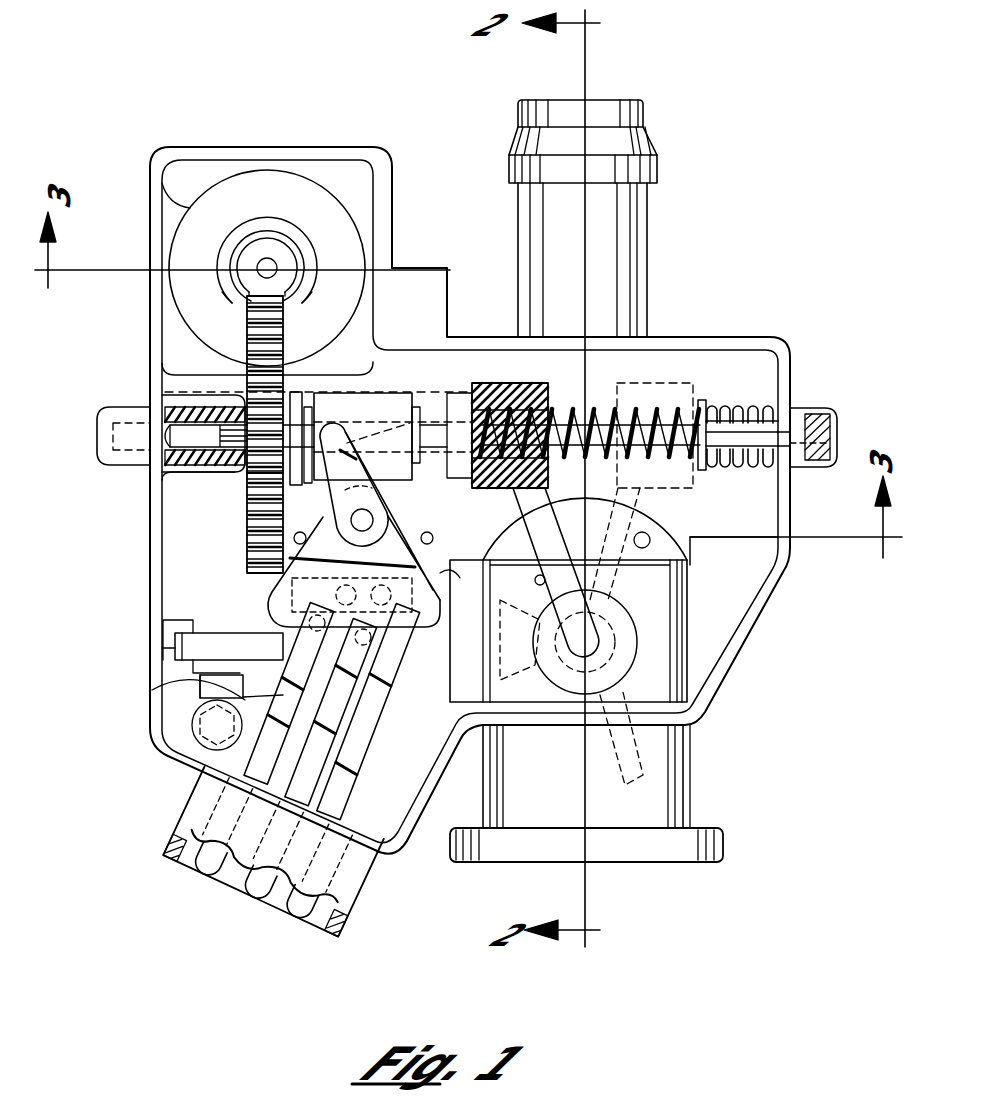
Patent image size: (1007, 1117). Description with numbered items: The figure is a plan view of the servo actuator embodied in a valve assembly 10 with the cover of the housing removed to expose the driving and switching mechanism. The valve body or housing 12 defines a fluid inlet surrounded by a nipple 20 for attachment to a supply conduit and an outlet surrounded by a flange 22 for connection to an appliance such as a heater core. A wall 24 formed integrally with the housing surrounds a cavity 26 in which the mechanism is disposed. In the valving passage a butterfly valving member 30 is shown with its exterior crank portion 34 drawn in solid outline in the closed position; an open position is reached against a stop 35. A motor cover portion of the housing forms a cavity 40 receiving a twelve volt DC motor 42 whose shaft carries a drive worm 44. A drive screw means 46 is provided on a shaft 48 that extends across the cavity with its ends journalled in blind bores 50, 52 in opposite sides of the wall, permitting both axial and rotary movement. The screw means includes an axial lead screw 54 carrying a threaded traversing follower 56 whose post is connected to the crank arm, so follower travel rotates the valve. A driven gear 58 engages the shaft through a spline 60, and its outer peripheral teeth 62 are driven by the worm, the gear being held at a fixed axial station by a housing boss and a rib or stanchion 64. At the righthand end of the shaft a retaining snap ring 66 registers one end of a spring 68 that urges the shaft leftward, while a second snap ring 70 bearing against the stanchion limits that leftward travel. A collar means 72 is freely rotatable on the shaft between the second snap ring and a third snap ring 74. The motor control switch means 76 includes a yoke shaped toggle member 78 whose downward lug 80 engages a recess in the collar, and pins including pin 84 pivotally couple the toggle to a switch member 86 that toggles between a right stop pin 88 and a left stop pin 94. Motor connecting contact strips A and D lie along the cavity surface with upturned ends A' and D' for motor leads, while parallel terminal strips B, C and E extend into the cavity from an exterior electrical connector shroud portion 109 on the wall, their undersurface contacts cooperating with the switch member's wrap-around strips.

The valve assembly 10 is at (156, 138).
The valve body or housing 12 is at (150, 676).
The nipple 20 is at (657, 167).
The flange 22 is at (723, 847).
The wall 24 is at (710, 354).
The cavity 26 is at (195, 546).
The movable valving member 30 is at (571, 584).
The crank portion 34 is at (535, 580).
The stop 35 is at (650, 532).
The cavity 40 is at (335, 178).
The motor 42 is at (150, 176).
The drive worm 44 is at (247, 242).
The drive screw means 46 is at (604, 394).
The shaft 48 is at (165, 392).
The blind bore 50 is at (150, 466).
The blind bore 52 is at (800, 412).
The lead screw 54 is at (510, 372).
The traversing follower 56 is at (530, 383).
The driven gear 58 is at (245, 336).
The spline 60 is at (245, 470).
The outer peripheral teeth 62 is at (243, 408).
The rib or stanchion 64 is at (301, 352).
The retaining washer or snap ring 66 is at (706, 404).
The spring 68 is at (742, 467).
The second washer or snap ring 70 is at (292, 392).
The collar means 72 is at (370, 420).
The third snap ring 74 is at (416, 340).
The motor control switch means 76 is at (419, 708).
The yoke shaped toggle member 78 is at (262, 479).
The pin or lug 80 is at (440, 410).
The pin 84 is at (378, 499).
The switch member 86 is at (440, 573).
The right stop pin 88 is at (430, 531).
The left stop pin 94 is at (302, 532).
The electrical connector shroud portion 109 is at (195, 809).
The motor connecting contact strip A is at (237, 712).
The upturned end of strip A A' is at (174, 704).
The terminal strip B is at (368, 712).
The terminal strip C is at (331, 712).
The motor connecting contact strip D is at (223, 646).
The upturned end of strip D D' is at (141, 645).
The terminal strip E is at (289, 694).